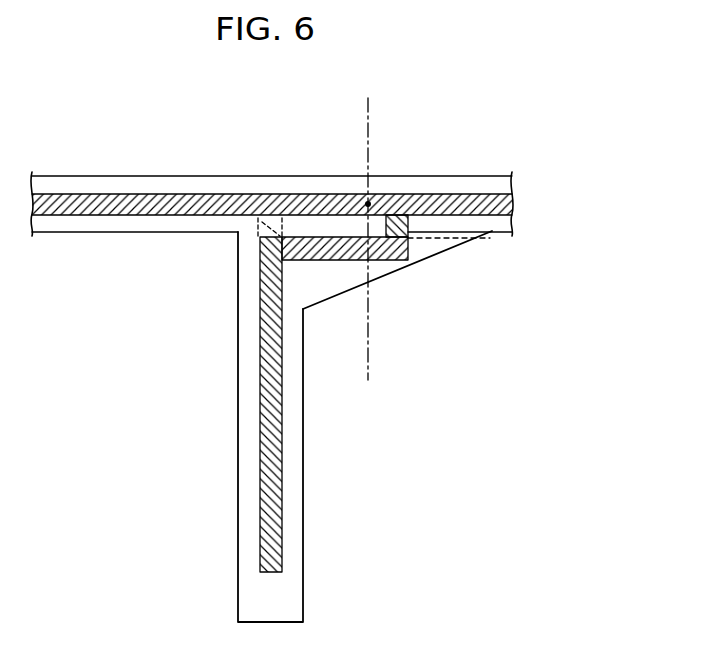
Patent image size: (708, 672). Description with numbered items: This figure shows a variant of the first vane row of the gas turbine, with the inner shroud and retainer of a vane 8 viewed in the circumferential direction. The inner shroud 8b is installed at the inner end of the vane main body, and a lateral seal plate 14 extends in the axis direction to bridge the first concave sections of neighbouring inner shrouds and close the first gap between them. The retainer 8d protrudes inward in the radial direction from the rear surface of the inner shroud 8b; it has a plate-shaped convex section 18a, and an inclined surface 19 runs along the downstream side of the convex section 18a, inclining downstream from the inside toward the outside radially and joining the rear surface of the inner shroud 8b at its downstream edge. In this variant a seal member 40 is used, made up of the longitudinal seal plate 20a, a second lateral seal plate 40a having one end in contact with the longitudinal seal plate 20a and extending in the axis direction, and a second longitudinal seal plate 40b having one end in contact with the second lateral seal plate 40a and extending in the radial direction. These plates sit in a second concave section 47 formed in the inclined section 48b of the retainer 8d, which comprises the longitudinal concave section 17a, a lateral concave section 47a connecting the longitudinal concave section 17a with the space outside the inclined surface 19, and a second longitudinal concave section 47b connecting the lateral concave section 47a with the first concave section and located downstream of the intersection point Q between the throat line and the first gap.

The vane 8 is at (587, 191).
The inner shroud 8b is at (507, 232).
The retainer 8d is at (106, 467).
The lateral seal plate 14 is at (118, 214).
The longitudinal concave section 17a is at (258, 250).
The convex section 18a is at (255, 593).
The inclined surface 19 is at (457, 246).
The longitudinal seal plate 20a is at (268, 464).
The seal member 40 is at (511, 385).
The second lateral seal plate 40a is at (398, 260).
The second longitudinal seal plate 40b is at (410, 220).
The second concave section 47 is at (106, 333).
The lateral concave section 47a is at (345, 247).
The second longitudinal concave section 47b is at (400, 222).
The inclined section 48b is at (327, 282).
The intersection point Q is at (372, 204).